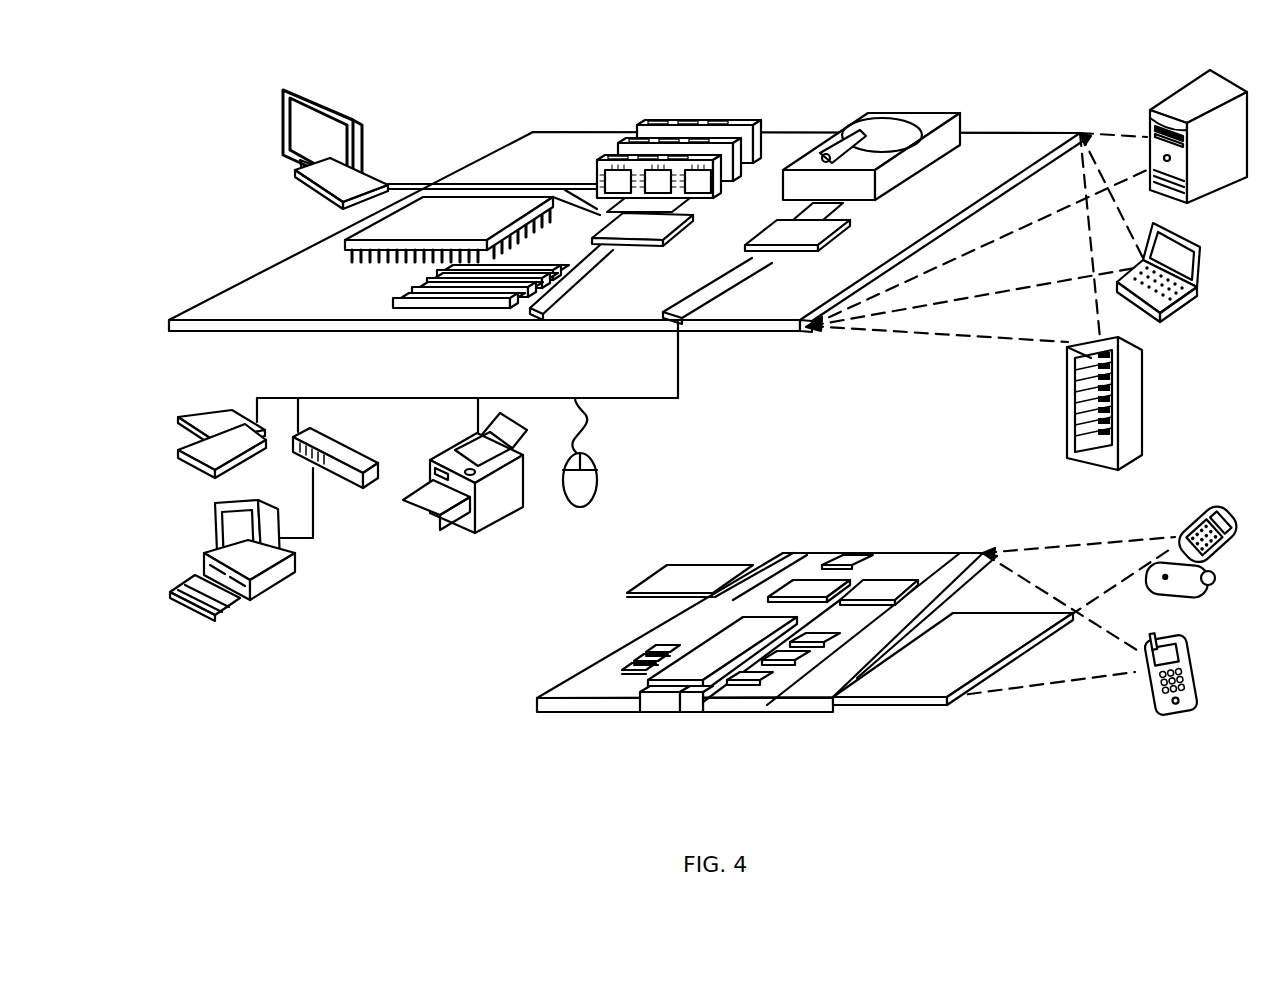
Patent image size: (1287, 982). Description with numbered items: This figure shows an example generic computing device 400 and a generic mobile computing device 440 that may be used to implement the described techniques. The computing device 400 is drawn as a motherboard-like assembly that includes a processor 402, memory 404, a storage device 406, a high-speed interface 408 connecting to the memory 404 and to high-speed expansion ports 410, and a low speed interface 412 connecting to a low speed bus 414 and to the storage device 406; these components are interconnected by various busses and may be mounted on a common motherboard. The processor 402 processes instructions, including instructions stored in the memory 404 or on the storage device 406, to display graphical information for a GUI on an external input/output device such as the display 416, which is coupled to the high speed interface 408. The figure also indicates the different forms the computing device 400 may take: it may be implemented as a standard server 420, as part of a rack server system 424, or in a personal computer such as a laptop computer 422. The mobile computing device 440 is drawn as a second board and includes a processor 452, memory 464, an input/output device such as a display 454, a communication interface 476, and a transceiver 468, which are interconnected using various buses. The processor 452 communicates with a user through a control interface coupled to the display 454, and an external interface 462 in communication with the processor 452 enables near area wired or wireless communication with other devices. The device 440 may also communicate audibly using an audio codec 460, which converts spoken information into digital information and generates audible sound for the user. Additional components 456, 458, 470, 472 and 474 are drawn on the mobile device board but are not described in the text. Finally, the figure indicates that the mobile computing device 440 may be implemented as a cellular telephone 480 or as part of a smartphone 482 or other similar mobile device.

The computing device 400 is at (456, 103).
The processor 402 is at (352, 242).
The memory 404 is at (645, 125).
The storage device 406 is at (866, 116).
The high-speed interface 408 is at (605, 222).
The high-speed expansion ports 410 is at (413, 292).
The low speed interface 412 is at (778, 227).
The low speed bus 414 is at (687, 321).
The display 416 is at (287, 83).
The standard server 420 is at (1148, 120).
The laptop computer 422 is at (1200, 246).
The rack server system 424 is at (1067, 428).
The mobile computing device 440 is at (508, 714).
The processor 452 is at (697, 670).
The display 454 is at (928, 694).
The chip 456 is at (763, 680).
The chip 458 is at (783, 658).
The audio codec 460 is at (817, 638).
The external interface 462 is at (667, 702).
The memory 464 is at (624, 662).
The transceiver 468 is at (877, 588).
The chip 470 is at (850, 557).
The rail 472 is at (738, 565).
The plate 474 is at (678, 564).
The communication interface 476 is at (807, 586).
The cellular telephone 480 is at (1195, 518).
The smartphone 482 is at (1145, 684).